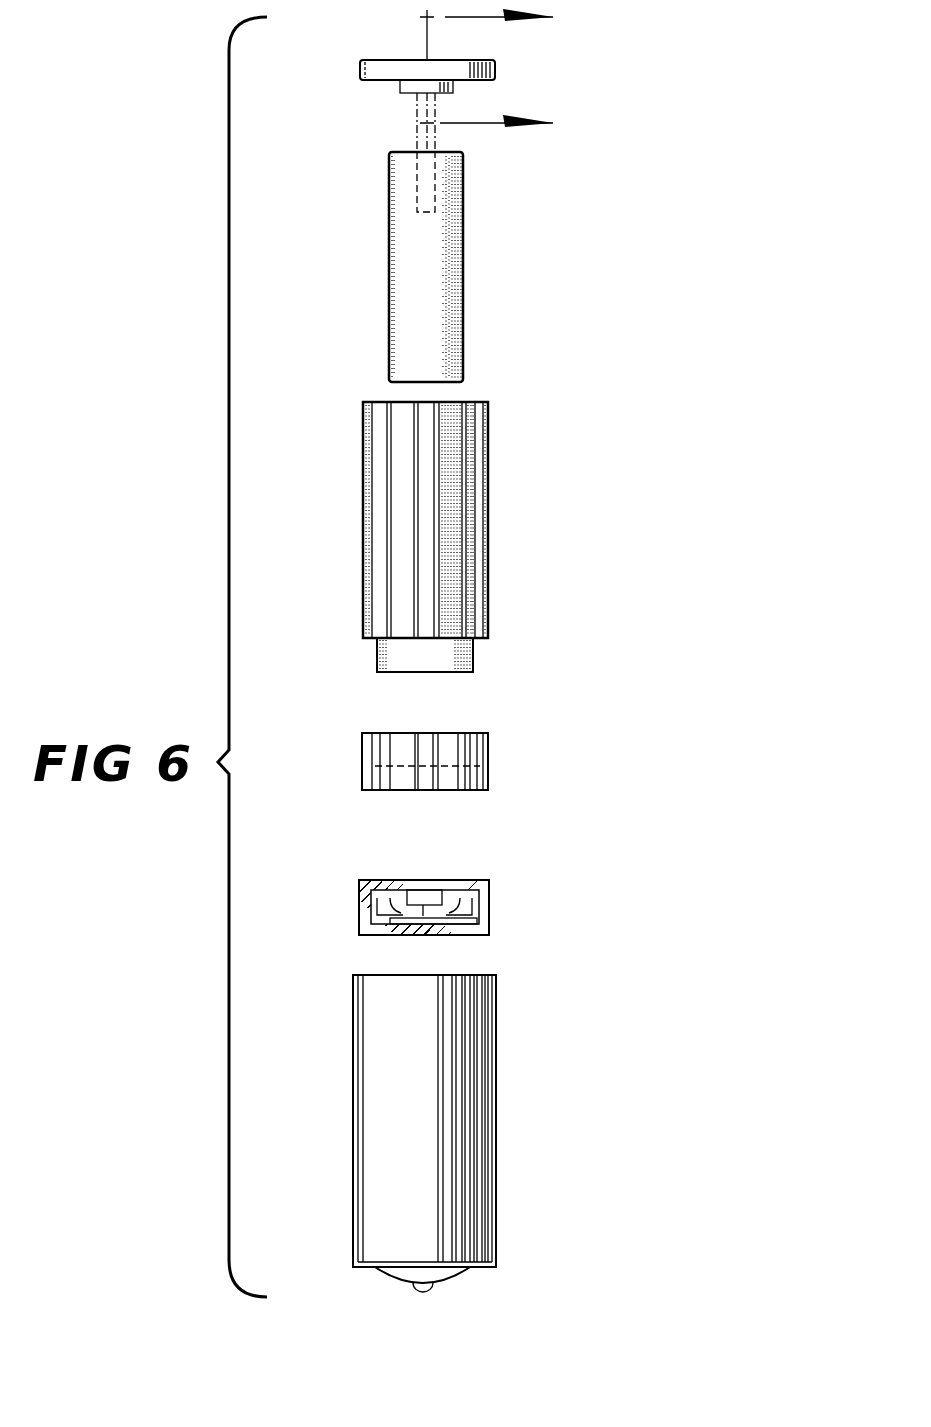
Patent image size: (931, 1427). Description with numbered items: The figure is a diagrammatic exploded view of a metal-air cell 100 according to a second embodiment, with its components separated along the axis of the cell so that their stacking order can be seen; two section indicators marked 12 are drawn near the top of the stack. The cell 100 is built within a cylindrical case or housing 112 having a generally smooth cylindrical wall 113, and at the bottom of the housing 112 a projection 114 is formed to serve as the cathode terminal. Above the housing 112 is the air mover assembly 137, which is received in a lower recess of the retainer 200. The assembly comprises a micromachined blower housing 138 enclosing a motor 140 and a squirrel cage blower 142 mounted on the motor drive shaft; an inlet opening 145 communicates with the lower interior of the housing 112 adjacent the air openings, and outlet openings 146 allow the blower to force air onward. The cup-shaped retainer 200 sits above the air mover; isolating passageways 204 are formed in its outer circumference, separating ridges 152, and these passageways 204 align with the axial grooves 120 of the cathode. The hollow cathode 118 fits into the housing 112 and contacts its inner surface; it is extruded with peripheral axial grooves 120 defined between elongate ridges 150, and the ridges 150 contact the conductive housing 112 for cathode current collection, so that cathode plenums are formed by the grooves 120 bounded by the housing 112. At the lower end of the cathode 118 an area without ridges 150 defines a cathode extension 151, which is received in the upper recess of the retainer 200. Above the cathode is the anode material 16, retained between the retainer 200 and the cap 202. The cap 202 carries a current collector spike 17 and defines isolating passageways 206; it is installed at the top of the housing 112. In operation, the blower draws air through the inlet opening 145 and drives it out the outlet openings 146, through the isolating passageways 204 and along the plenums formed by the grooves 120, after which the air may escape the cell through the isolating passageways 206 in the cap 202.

The cell 100 is at (614, 204).
The section line 12- 12 is at (509, 77).
The cap 202 is at (360, 73).
The isolating passageways 206 is at (364, 57).
The current collector spike 17 is at (437, 193).
The anode material 16 is at (463, 293).
The hollow cathode 118 is at (488, 560).
The axial grooves 120 is at (463, 404).
The ridges 150 is at (446, 462).
The cathode extension 151 is at (473, 655).
The retainer 200 is at (488, 790).
The ridges 152 is at (440, 733).
The isolating passageways 204 is at (450, 753).
The air mover assembly 137 is at (499, 880).
The blower housing 138 is at (410, 889).
The motor 140 is at (430, 893).
The outlet openings 146 is at (361, 901).
The squirrel cage blower 142 is at (393, 923).
The inlet opening 145 is at (447, 932).
The housing 112 is at (506, 1075).
The cylindrical wall 113 is at (480, 1172).
The projection 114 is at (430, 1292).